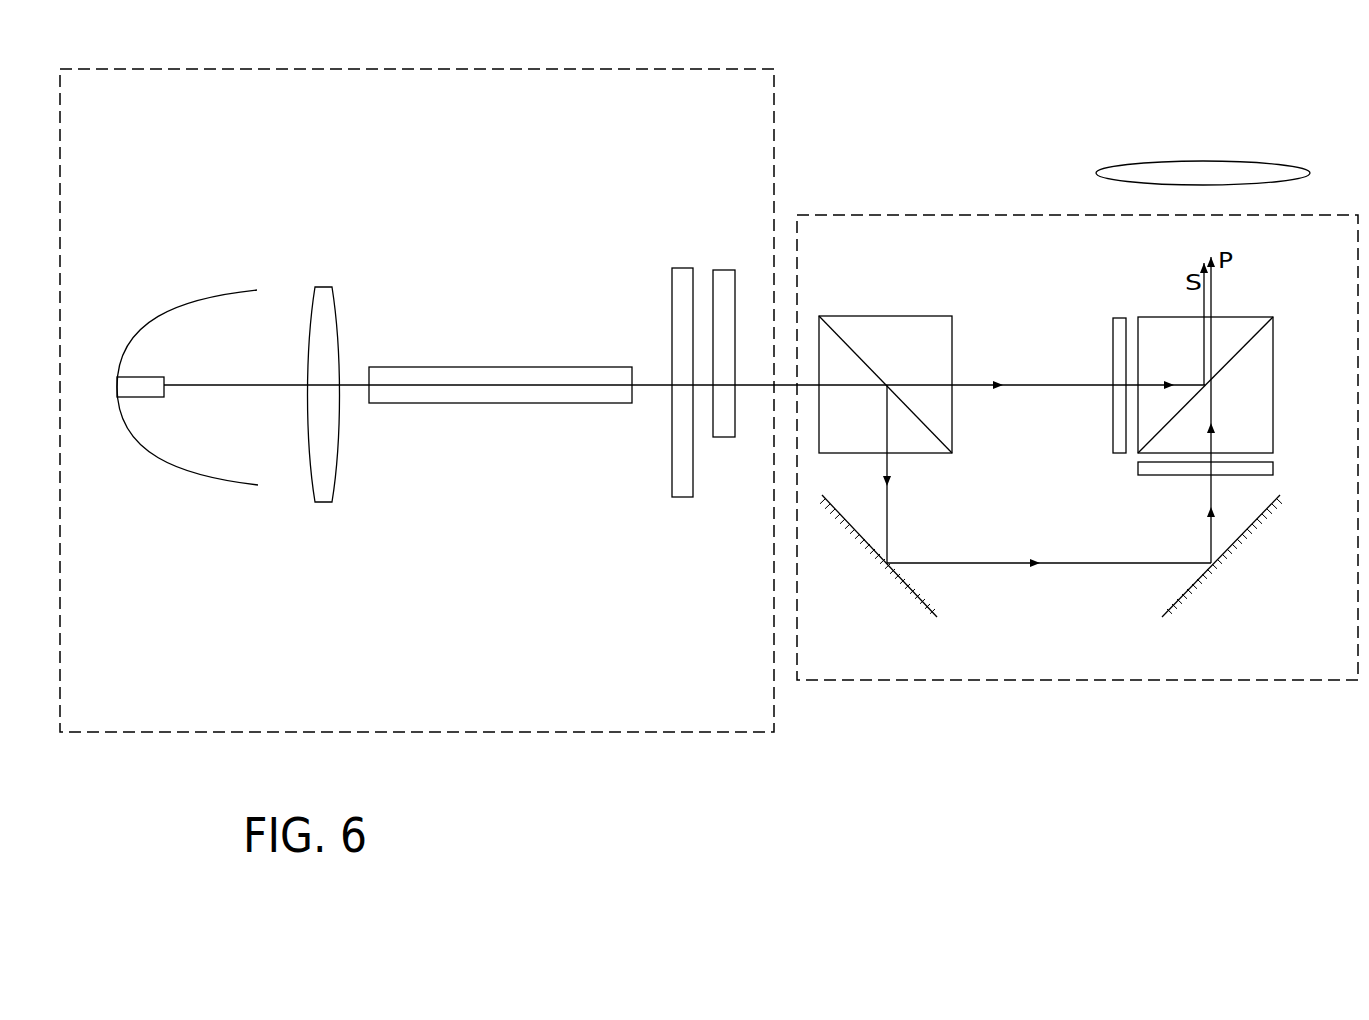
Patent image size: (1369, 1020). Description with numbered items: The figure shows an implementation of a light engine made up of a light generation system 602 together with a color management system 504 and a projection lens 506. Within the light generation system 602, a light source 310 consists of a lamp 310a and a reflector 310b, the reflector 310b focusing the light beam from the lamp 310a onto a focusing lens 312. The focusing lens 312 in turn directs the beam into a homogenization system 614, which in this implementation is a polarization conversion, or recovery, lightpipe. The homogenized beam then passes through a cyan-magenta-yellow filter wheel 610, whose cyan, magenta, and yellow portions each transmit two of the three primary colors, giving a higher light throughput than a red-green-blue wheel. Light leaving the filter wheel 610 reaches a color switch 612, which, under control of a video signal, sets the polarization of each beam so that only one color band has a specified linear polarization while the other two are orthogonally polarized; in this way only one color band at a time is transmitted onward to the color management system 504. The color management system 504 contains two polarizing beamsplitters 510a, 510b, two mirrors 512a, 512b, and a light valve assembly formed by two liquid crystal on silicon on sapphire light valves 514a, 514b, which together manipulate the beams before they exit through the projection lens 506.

The light generation system 602 is at (507, 69).
The light source 310 is at (167, 395).
The lamp 310a is at (152, 377).
The reflector 310b is at (222, 297).
The focusing lens 312 is at (323, 348).
The homogenization system 614 is at (500, 432).
The CMY filter wheel 610 is at (672, 498).
The color switch 612 is at (737, 276).
The projection lens 506 is at (1200, 142).
The color management system 504 is at (1077, 465).
The polarizing beamsplitter 510a is at (912, 342).
The polarizing beamsplitter 510b is at (1255, 389).
The LCOSOS light valve 514a is at (1110, 343).
The LCOSOS light valve 514b is at (1133, 467).
The mirror 512a is at (878, 575).
The mirror 512b is at (1230, 571).